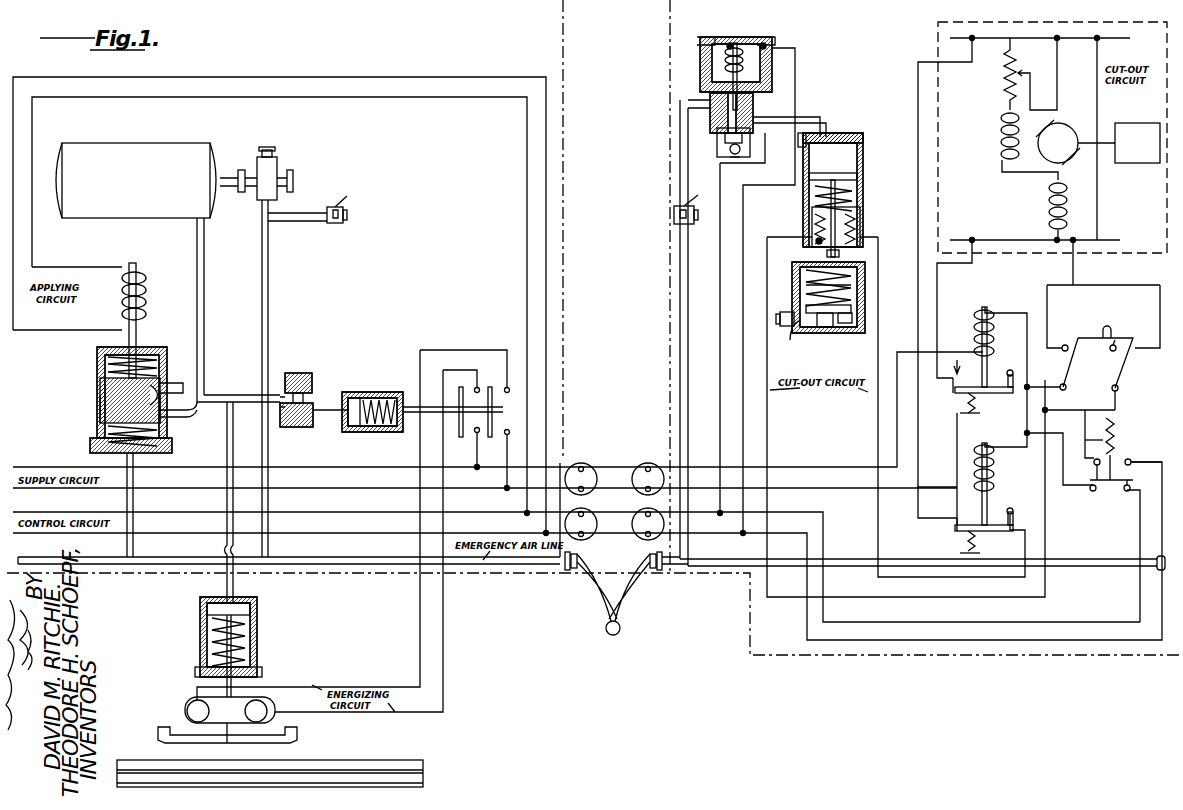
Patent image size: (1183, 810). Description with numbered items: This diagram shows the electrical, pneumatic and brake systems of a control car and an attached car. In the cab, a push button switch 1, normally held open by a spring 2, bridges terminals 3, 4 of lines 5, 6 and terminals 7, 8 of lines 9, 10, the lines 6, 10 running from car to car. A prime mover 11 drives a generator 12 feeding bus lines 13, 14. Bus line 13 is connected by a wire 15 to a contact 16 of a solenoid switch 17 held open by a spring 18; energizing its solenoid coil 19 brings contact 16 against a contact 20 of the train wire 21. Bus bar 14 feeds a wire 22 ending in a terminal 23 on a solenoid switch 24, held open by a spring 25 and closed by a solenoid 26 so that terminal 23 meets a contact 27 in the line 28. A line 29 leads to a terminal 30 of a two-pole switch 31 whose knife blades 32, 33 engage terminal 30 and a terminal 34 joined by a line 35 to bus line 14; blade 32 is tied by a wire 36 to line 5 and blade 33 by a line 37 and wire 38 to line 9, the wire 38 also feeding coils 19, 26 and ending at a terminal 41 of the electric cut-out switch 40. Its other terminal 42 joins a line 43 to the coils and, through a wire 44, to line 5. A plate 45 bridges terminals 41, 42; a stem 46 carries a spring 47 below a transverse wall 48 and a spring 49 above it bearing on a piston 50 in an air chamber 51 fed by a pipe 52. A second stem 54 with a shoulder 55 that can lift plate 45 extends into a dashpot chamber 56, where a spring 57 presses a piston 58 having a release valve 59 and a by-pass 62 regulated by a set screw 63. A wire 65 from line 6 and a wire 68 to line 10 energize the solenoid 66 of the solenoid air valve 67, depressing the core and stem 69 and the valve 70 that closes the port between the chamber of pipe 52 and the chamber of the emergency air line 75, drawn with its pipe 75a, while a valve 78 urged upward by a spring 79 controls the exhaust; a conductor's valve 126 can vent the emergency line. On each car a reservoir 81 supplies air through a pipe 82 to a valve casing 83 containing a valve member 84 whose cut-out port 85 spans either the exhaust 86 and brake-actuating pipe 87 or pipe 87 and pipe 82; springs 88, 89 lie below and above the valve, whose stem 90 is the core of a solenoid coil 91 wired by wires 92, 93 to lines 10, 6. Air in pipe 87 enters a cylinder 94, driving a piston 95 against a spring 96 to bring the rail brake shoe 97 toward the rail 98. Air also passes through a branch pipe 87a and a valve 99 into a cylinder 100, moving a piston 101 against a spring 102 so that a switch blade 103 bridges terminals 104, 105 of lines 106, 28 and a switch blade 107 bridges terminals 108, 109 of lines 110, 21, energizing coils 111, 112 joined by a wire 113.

The push button switch 1 is at (1120, 480).
The spring 2 is at (1116, 426).
The terminal 3 is at (1131, 459).
The terminal 4 is at (1093, 434).
The line 5 is at (1087, 429).
The line 6 is at (334, 533).
The terminal 7 is at (1097, 490).
The terminal 8 is at (1127, 491).
The line 9 is at (1080, 488).
The line 10 is at (311, 512).
The prime mover 11 is at (1152, 125).
The generator 12 is at (1063, 135).
The bus line 13 is at (1118, 38).
The bus line 14 is at (1010, 240).
The wire 15 is at (918, 104).
The contact 16 is at (955, 526).
The solenoid switch 17 is at (1010, 530).
The spring 18 is at (968, 545).
The solenoid coil 19 is at (978, 468).
The contact 20 is at (945, 510).
The wire 21 is at (351, 498).
The wire 22 is at (937, 305).
The terminal 23 is at (953, 390).
The solenoid switch 24 is at (1010, 395).
The spring 25 is at (968, 410).
The solenoid 26 is at (992, 346).
The contact 27 is at (957, 360).
The line 28 is at (349, 468).
The line 29 is at (1097, 228).
The terminal 30 is at (1098, 363).
The two-pole switch 31 is at (1131, 338).
The knife blade 32 is at (1124, 372).
The knife blade 33 is at (1068, 346).
The terminal 34 is at (1062, 344).
The line 35 is at (1073, 284).
The wire 36 is at (1118, 400).
The line 37 is at (1062, 384).
The wire 38 is at (878, 414).
The electric cut-out switch 40 is at (869, 151).
The terminal 41 is at (858, 238).
The terminal 42 is at (812, 252).
The line 43 is at (767, 410).
The wire 44 is at (1063, 410).
The contact plate 45 is at (812, 238).
The stem 46 is at (858, 226).
The spring 47 is at (850, 220).
The transverse wall 48 is at (855, 195).
The spring 49 is at (812, 196).
The piston 50 is at (857, 176).
The air chamber 51 is at (842, 147).
The pipe 52 is at (822, 119).
The second stem 54 is at (851, 275).
The shoulder 55 is at (840, 254).
The dashpot chamber 56 is at (851, 288).
The spring 57 is at (851, 308).
The piston 58 is at (842, 325).
The release valve 59 is at (825, 328).
The by-pass 62 is at (786, 328).
The set screw 63 is at (790, 340).
The wire 65 is at (796, 93).
The solenoid 66 is at (730, 44).
The solenoid air valve 67 is at (764, 44).
The wire 68 is at (718, 333).
The core and stem 69 is at (740, 44).
The valve 70 is at (727, 113).
The emergency air line 75 is at (515, 564).
The branch pipe 75a is at (135, 548).
The valve 78 is at (722, 146).
The spring 79 is at (728, 156).
The reservoir 81 is at (176, 134).
The supply pipe 82 is at (204, 268).
The valve casing 83 is at (100, 405).
The valve member 84 is at (100, 415).
The cut-out port 85 is at (97, 388).
The exhaust 86 is at (165, 385).
The brake-actuating pipe 87 is at (231, 396).
The branch pipe 87a is at (325, 405).
The spring 88 is at (100, 442).
The spring 89 is at (97, 360).
The valve stem 90 is at (137, 340).
The solenoid coil 91 is at (146, 305).
The wire 92 is at (20, 332).
The wire 93 is at (34, 261).
The cylinder 94 is at (257, 612).
The piston 95 is at (200, 612).
The spring 96 is at (212, 640).
The rail brake shoe 97 is at (297, 742).
The rail 98 is at (400, 760).
The valve 99 is at (300, 368).
The cylinder 100 is at (352, 432).
The piston 101 is at (356, 398).
The spring 102 is at (385, 392).
The switch blade 103 is at (460, 430).
The terminal 104 is at (477, 375).
The terminal 105 is at (475, 434).
The line 106 is at (443, 648).
The switch blade 107 is at (490, 438).
The terminal 108 is at (507, 393).
The terminal 109 is at (504, 432).
The line 110 is at (420, 624).
The energization coil 111 is at (186, 712).
The energization coil 112 is at (272, 712).
The wire 113 is at (228, 743).
The conductor's valve 126 is at (338, 224).